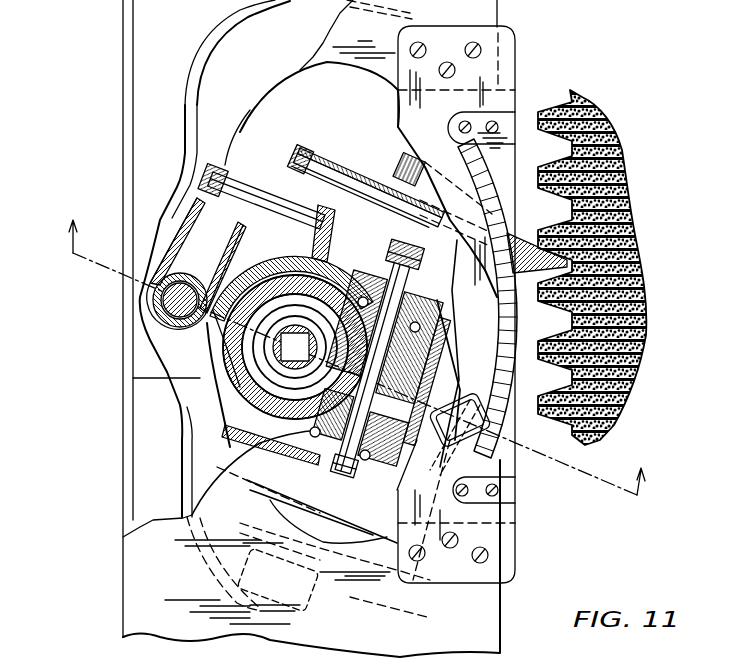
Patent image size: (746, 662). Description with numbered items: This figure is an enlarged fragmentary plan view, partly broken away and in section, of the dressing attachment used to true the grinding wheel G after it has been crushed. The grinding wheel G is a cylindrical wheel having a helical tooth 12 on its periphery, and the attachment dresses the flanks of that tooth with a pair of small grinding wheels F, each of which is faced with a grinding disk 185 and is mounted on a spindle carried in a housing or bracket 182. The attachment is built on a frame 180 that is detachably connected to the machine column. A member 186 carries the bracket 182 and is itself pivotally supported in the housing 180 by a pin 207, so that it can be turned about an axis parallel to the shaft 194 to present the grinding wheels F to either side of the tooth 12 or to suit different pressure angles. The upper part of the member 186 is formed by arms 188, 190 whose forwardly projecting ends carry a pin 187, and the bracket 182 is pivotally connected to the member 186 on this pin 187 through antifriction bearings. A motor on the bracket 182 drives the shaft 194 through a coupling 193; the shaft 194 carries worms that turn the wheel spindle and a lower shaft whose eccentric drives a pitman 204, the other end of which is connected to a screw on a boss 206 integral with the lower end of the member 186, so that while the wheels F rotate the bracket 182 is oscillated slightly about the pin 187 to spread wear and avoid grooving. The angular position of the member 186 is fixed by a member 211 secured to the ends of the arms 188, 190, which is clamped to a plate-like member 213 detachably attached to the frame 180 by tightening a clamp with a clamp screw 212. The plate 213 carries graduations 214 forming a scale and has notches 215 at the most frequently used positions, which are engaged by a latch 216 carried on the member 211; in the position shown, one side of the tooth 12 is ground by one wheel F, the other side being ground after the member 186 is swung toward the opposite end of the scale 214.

The frame 180 is at (143, 14).
The helical tooth 12 is at (566, 198).
The grinding disk 185 is at (312, 152).
The plate-like member 213 is at (500, 96).
The notches 215 is at (447, 160).
The graduations 214 is at (498, 168).
The grinding wheel G is at (625, 368).
The bracket 182 is at (325, 208).
The boss 206 is at (198, 208).
The pitman 204 is at (250, 187).
The grinding wheel F is at (352, 168).
The arm 190 is at (316, 242).
The pin 207 is at (170, 305).
The member 186 is at (245, 340).
The coupling 193 is at (240, 357).
The shaft 194 is at (240, 398).
The member 211 is at (450, 332).
The clamp screw 212 is at (455, 373).
The pin 187 is at (318, 486).
The latch 216 is at (487, 420).
The arm 188 is at (250, 447).